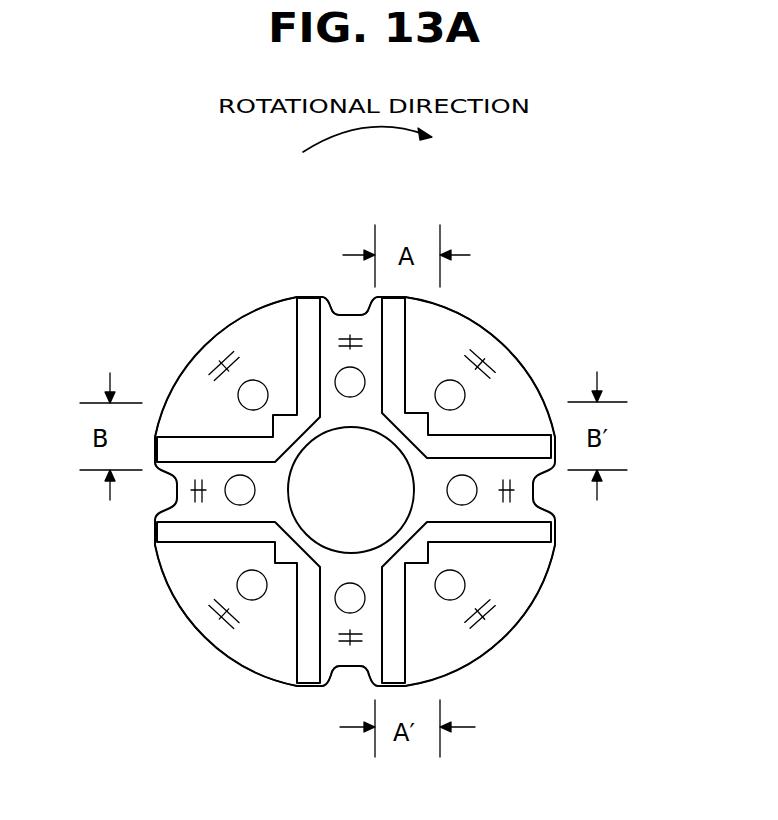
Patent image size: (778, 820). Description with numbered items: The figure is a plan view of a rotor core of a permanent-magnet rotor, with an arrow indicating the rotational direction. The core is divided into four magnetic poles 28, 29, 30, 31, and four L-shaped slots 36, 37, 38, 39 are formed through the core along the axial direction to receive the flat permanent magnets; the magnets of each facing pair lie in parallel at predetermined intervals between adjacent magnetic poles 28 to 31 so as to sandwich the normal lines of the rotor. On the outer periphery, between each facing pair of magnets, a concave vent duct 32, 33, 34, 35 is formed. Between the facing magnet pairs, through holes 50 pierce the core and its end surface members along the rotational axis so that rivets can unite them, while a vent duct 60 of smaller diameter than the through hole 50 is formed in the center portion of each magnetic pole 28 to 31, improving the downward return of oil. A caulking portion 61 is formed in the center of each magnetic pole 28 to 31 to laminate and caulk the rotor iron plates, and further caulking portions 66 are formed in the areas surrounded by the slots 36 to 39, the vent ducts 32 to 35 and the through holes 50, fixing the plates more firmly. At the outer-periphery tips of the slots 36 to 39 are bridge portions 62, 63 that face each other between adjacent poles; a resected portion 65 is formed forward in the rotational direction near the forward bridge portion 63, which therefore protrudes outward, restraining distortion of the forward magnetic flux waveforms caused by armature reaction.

The magnetic pole 28 is at (524, 436).
The magnetic pole 29 is at (292, 353).
The magnetic pole 30 is at (289, 654).
The magnetic pole 31 is at (447, 654).
The concave vent duct 32 is at (337, 313).
The concave vent duct 33 is at (172, 501).
The concave vent duct 34 is at (340, 668).
The concave vent duct 35 is at (540, 506).
The L-shaped slot 36 is at (297, 327).
The L-shaped slot 37 is at (252, 661).
The L-shaped slot 38 is at (428, 678).
The L-shaped slot 39 is at (408, 337).
The through hole 50 is at (336, 369).
The vent duct 60 is at (240, 399).
The caulking portion 61 is at (218, 361).
The bridge portion 62 is at (152, 445).
The forward bridge portion 63 is at (315, 298).
The resected portion 65 is at (297, 300).
The caulking portion 66 is at (349, 336).